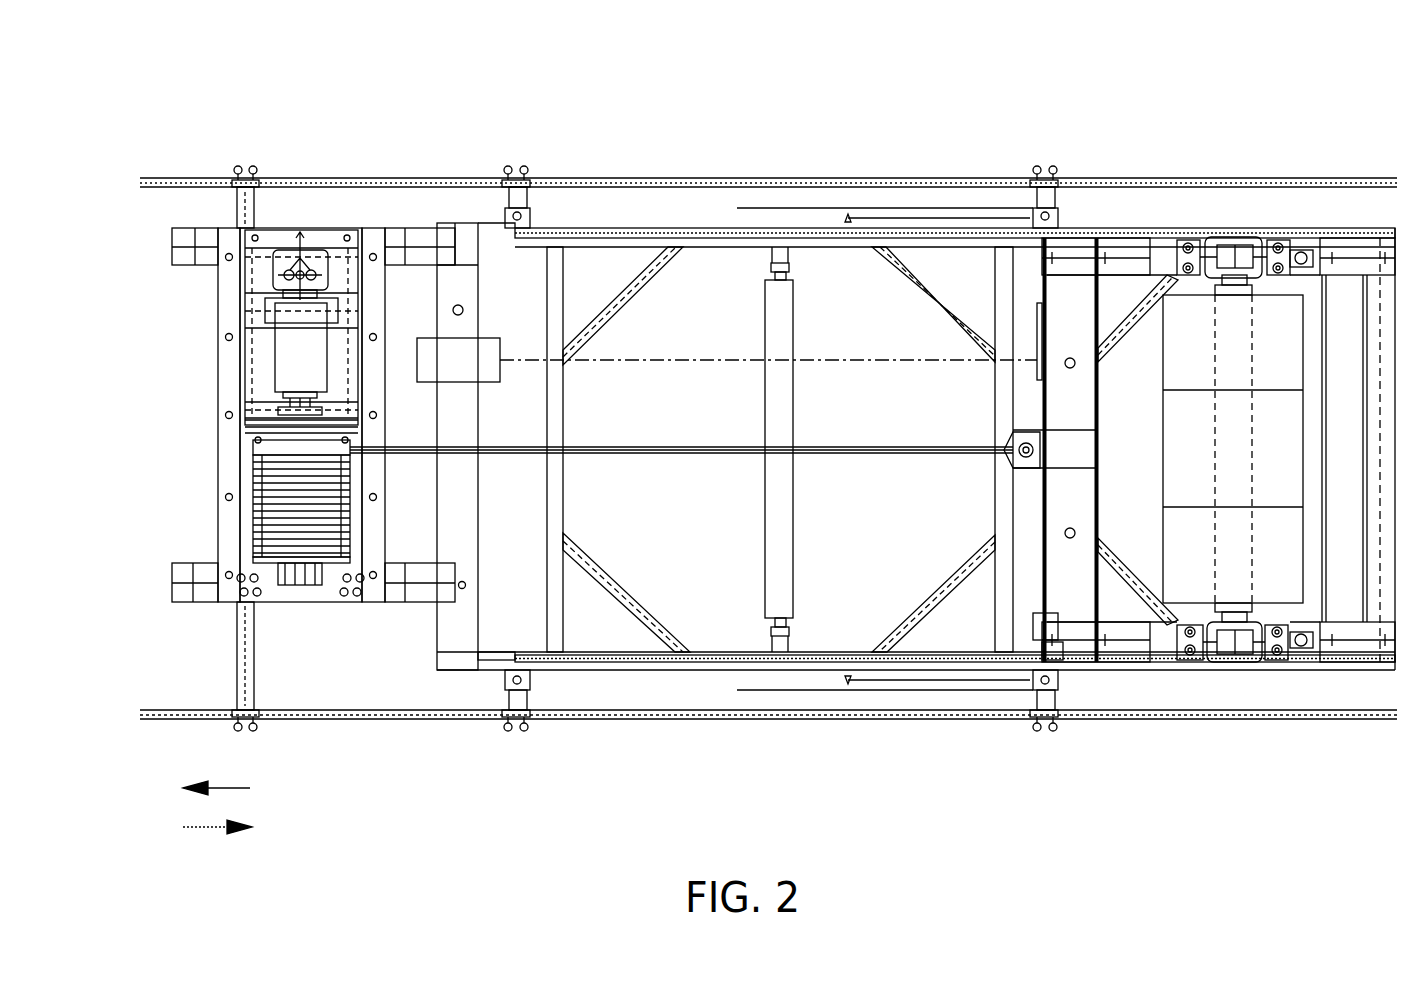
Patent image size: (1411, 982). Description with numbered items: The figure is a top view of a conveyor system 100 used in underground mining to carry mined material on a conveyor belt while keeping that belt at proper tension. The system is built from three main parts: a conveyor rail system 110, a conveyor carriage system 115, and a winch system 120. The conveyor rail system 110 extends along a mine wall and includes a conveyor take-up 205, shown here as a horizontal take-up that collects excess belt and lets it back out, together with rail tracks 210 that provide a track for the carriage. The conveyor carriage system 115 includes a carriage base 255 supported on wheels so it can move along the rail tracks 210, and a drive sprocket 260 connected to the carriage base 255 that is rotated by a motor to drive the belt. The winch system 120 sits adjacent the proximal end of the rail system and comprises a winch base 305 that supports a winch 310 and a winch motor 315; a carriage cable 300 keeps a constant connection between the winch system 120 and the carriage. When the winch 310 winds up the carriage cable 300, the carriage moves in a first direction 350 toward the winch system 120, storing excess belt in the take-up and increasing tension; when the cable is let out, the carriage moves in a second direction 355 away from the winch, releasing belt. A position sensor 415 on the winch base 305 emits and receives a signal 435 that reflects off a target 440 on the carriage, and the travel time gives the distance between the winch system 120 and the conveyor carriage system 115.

The conveyor system 100 is at (388, 111).
The conveyor rail system 110 is at (791, 748).
The conveyor carriage system 115 is at (1201, 198).
The winch system 120 is at (156, 485).
The conveyor take-up 205 is at (510, 618).
The rail tracks 210 is at (713, 210).
The carriage base 255 is at (1075, 598).
The drive sprocket 260 is at (1188, 590).
The carriage cable 300 is at (912, 448).
The winch base 305 is at (195, 605).
The winch 310 is at (262, 460).
The winch motor 315 is at (287, 370).
The first direction 350 is at (239, 785).
The second direction 355 is at (239, 835).
The position sensor 415 is at (494, 333).
The signal 435 is at (679, 368).
The target 440 is at (1025, 322).